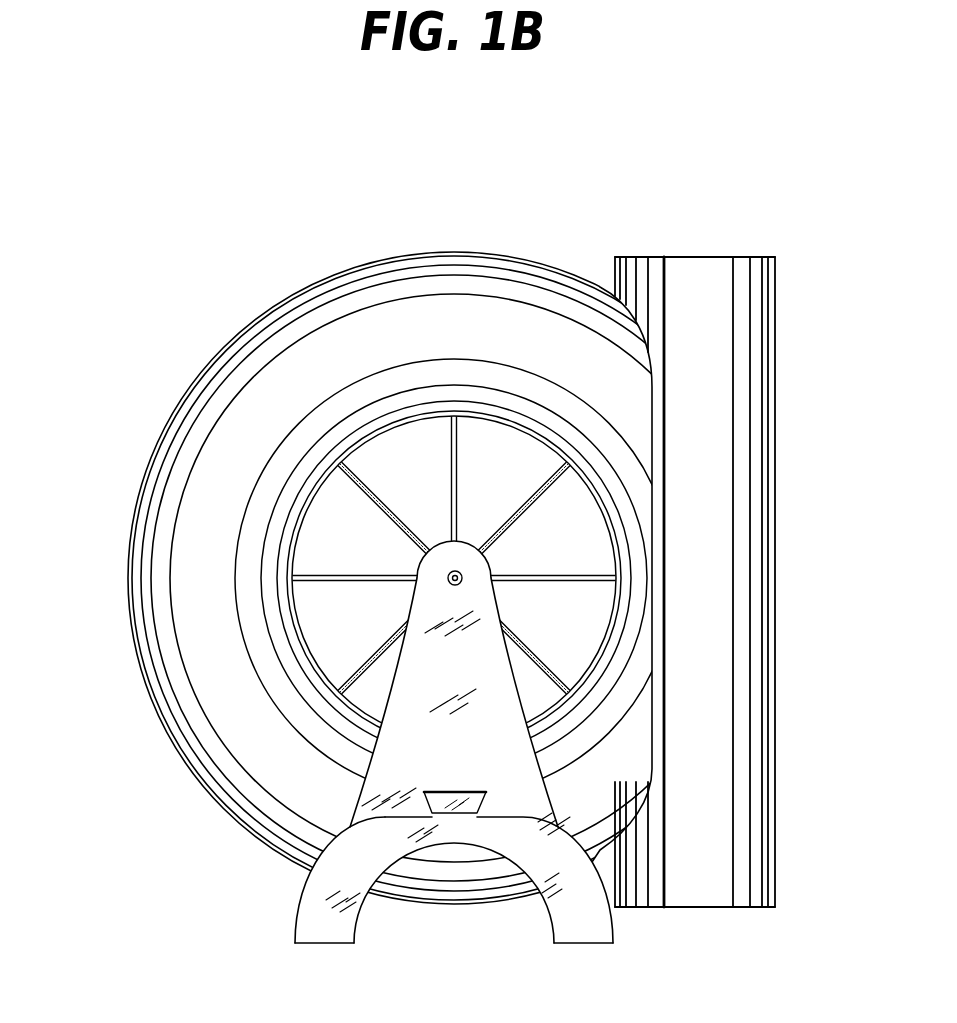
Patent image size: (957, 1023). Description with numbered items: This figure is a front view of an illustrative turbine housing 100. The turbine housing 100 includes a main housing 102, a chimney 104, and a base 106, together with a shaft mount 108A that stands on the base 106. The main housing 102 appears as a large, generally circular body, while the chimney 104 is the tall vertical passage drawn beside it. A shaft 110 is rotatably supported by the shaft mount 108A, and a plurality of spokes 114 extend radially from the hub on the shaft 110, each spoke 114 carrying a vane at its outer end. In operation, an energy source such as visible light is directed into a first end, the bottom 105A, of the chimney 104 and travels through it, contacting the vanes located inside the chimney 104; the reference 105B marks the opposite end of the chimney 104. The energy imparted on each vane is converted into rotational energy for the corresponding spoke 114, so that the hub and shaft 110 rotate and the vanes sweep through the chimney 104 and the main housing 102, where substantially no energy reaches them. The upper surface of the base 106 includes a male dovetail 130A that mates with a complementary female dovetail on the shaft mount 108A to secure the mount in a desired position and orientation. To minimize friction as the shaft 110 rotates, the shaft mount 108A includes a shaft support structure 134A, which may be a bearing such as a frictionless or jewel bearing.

The turbine housing 100 is at (141, 222).
The main housing 102 is at (325, 280).
The chimney 104 is at (772, 490).
The bottom 105A is at (702, 944).
The second direction 105B is at (702, 223).
The base 106 is at (358, 910).
The shaft mount 108A is at (298, 908).
The shaft 110 is at (446, 577).
The spoke 114 is at (377, 493).
The male dovetail 130A is at (465, 812).
The shaft support structure 134A is at (447, 583).